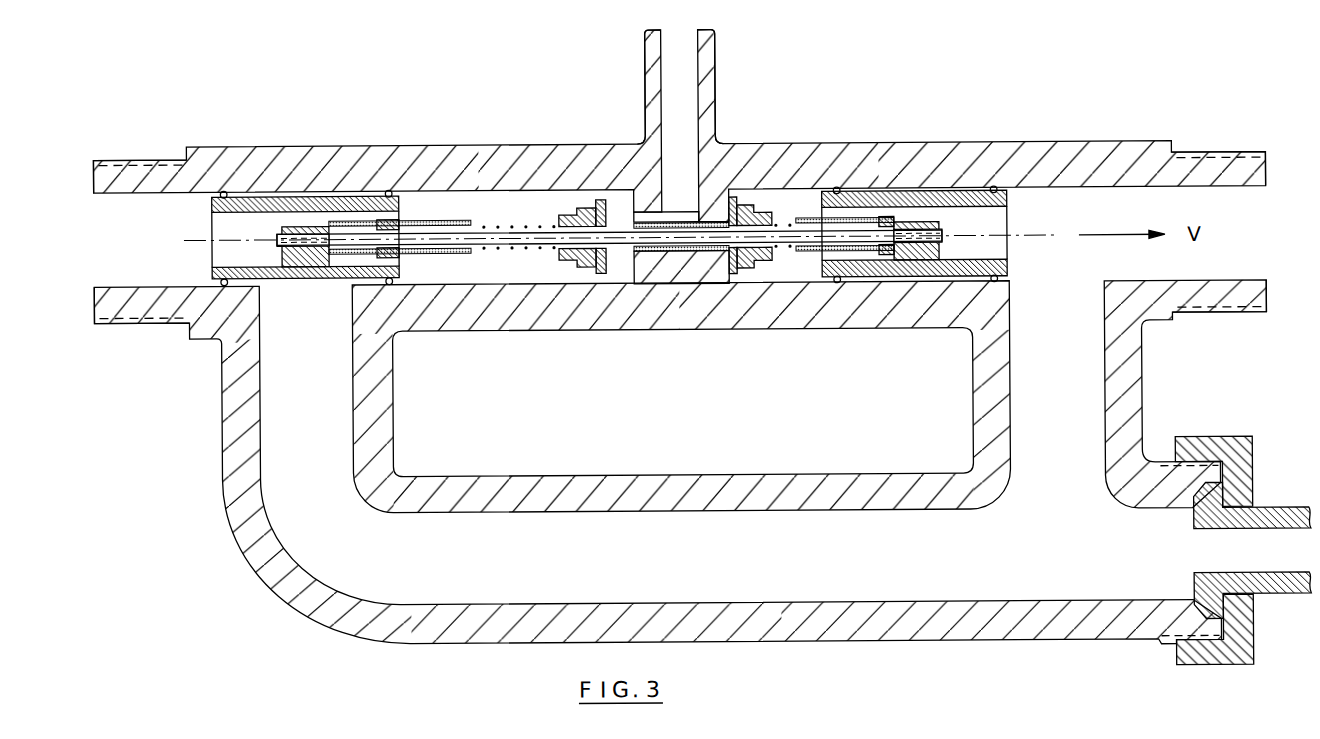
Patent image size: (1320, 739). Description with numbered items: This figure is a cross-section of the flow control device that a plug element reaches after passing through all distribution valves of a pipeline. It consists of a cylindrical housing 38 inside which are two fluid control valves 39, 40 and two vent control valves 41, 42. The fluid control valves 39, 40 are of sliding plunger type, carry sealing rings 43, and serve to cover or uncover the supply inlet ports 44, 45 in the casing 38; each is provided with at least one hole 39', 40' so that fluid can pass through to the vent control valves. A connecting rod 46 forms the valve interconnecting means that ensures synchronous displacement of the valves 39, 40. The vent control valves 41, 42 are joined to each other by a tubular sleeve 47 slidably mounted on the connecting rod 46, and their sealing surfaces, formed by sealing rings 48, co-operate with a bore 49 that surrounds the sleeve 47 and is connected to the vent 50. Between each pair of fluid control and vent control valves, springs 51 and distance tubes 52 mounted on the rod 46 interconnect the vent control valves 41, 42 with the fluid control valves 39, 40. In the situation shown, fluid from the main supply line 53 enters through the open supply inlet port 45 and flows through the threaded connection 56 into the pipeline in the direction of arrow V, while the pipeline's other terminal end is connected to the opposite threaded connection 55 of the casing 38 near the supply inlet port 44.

The cylindrical housing 38 is at (1043, 146).
The fluid control valve 39 is at (305, 191).
The hole 39' is at (302, 184).
The fluid control valve 40 is at (914, 189).
The hole 40' is at (934, 181).
The vent control valve 41 is at (568, 214).
The vent control valve 42 is at (757, 205).
The sealing rings 43 is at (226, 191).
The supply inlet port 44 is at (287, 310).
The supply inlet port 45 is at (1063, 297).
The rod 46 is at (490, 232).
The tubular sleeve 47 is at (603, 199).
The sealing rings 48 is at (736, 197).
The bore 49 is at (640, 212).
The vent 50 is at (688, 34).
The springs 51 is at (520, 225).
The distance tubes 52 is at (438, 218).
The main supply line 53 is at (1267, 547).
The threaded connection 55 is at (142, 157).
The threaded connection 56 is at (1223, 156).